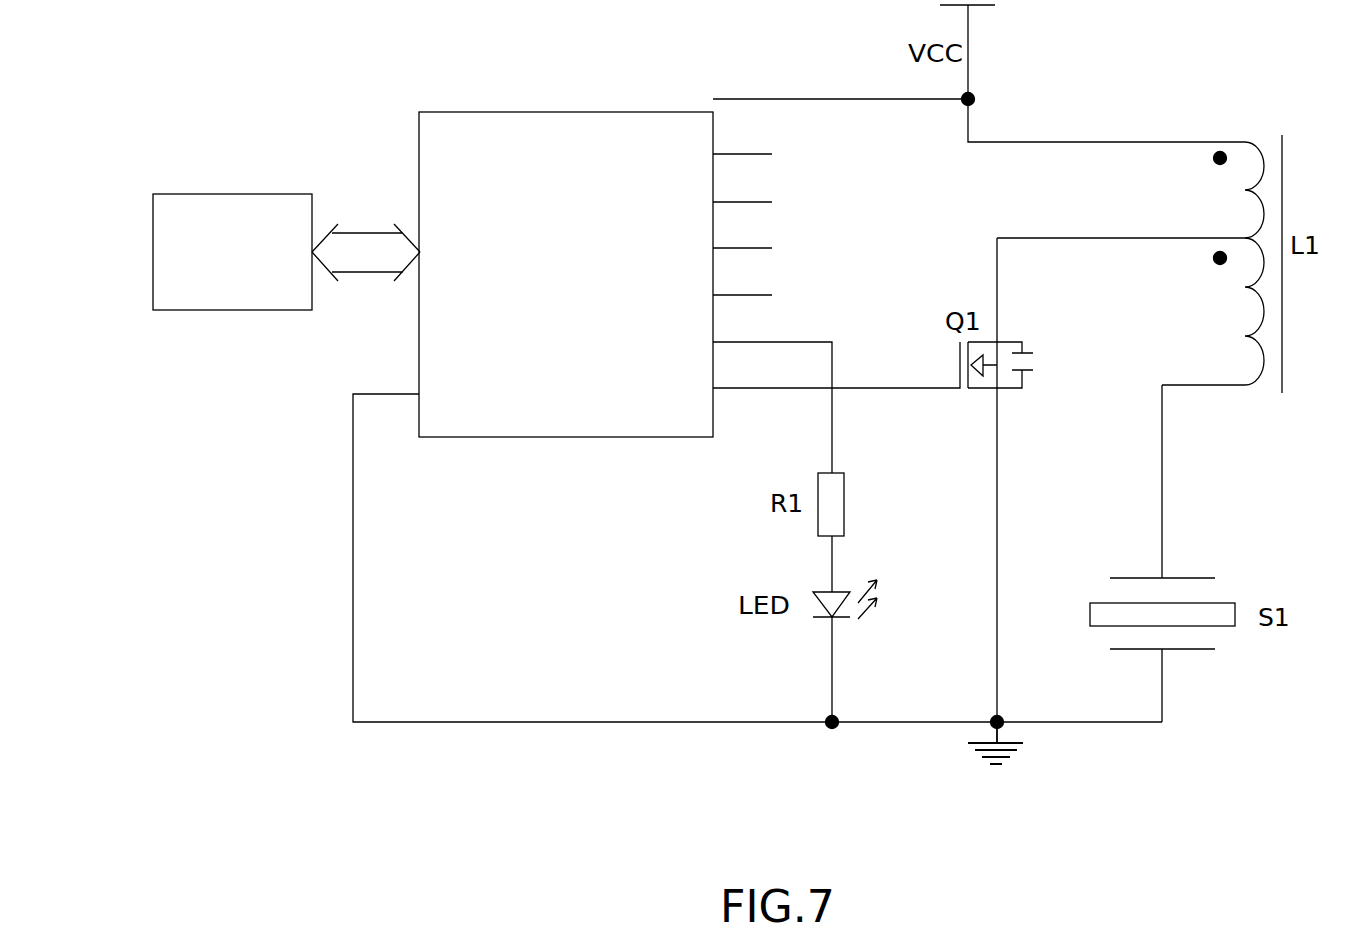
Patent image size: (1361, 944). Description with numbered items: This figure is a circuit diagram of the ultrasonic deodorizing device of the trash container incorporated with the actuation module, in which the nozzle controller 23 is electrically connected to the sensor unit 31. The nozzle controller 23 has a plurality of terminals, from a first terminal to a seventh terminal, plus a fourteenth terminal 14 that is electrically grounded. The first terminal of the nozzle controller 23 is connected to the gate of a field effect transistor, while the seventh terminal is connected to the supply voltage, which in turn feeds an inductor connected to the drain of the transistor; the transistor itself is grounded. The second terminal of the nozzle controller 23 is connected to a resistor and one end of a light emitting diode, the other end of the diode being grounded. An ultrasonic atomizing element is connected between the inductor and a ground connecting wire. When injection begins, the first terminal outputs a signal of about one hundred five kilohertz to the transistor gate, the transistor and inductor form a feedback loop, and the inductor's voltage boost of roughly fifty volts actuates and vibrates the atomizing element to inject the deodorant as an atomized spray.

The sensor unit 31 is at (232, 252).
The nozzle controller 23 is at (595, 274).
The fourteenth terminal 14 is at (592, 558).